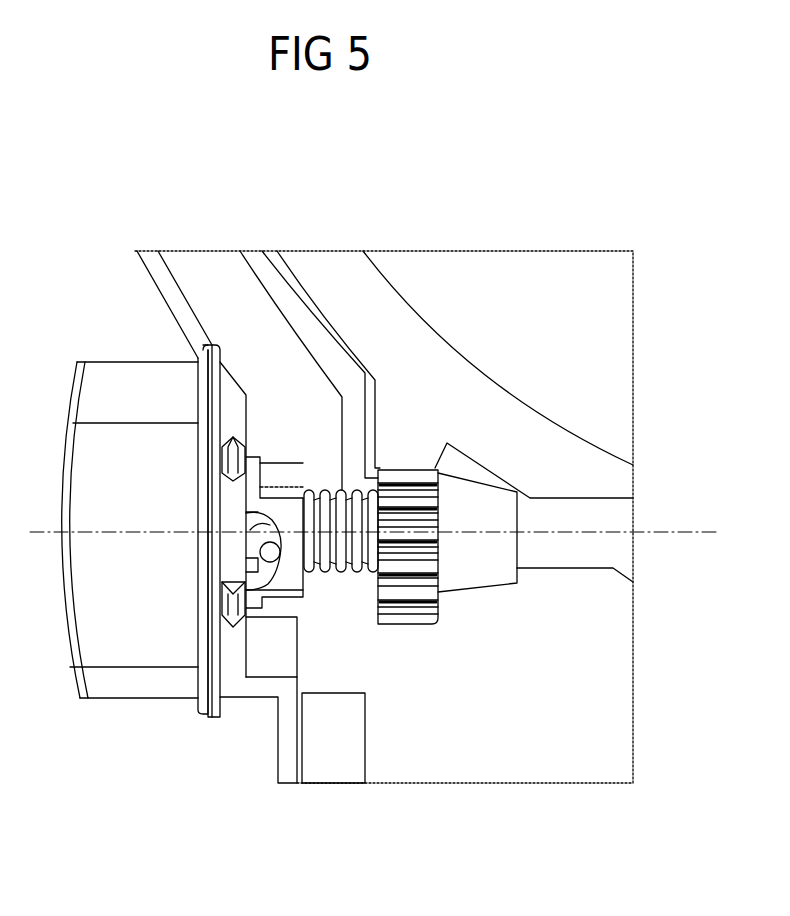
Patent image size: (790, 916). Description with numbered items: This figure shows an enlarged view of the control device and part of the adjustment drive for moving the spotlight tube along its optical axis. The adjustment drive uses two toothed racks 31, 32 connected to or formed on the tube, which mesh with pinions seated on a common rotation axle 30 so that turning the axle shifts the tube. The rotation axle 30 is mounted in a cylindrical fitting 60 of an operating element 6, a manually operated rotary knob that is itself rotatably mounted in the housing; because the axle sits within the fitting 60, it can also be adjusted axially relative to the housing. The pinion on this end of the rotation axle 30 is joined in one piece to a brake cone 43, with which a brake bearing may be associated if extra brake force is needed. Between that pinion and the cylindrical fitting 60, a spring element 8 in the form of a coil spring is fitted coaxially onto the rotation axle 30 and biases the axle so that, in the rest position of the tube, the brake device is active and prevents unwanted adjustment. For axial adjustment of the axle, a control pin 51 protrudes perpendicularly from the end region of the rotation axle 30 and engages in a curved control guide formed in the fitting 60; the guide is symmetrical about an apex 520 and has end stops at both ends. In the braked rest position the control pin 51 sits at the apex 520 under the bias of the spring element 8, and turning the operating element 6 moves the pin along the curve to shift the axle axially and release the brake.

The operating element 6 is at (128, 388).
The spring element 8 is at (355, 572).
The rotation axle 30 is at (600, 512).
The toothed rack 31 is at (410, 447).
The toothed rack 32 is at (415, 612).
The brake cone 43 is at (475, 578).
The control pin 51 is at (255, 560).
The cylindrical fitting 60 is at (278, 468).
The apex 520 is at (275, 545).